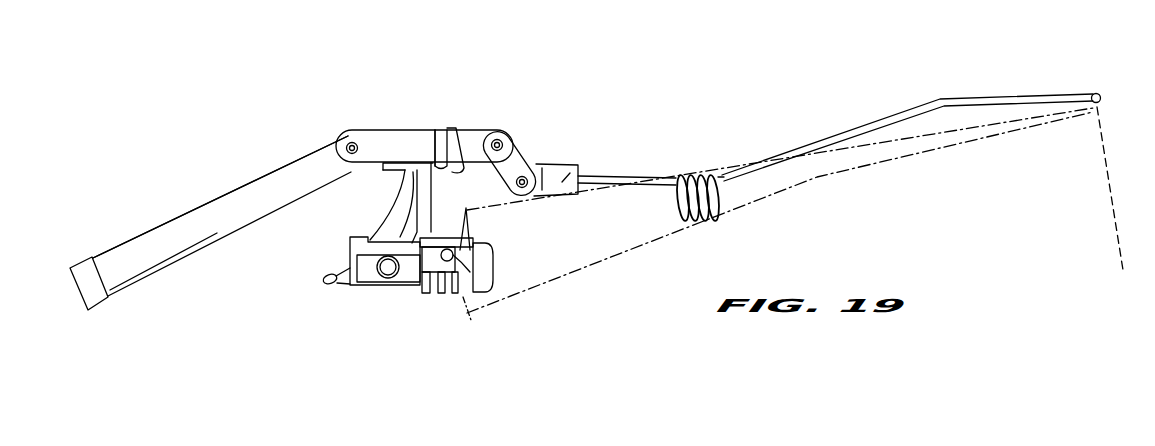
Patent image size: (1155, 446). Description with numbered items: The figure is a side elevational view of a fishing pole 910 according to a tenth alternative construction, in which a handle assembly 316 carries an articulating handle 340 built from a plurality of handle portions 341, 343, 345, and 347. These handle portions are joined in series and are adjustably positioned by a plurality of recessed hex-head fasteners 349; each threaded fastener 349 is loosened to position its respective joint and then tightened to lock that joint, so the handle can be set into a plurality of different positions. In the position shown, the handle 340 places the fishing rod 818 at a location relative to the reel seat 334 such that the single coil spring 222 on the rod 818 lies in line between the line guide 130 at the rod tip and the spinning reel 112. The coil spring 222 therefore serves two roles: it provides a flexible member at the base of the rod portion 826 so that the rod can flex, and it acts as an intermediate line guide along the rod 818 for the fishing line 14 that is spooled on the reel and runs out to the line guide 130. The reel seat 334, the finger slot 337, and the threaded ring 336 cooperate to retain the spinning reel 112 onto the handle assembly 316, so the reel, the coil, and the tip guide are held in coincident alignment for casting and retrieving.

The fishing pole 910 is at (195, 130).
The handle assembly 316 is at (257, 277).
The handle 340 is at (215, 197).
The handle portion 341 is at (298, 157).
The handle portion 343 is at (418, 128).
The recessed hex-head fastener 349 is at (348, 142).
The reel seat 334 is at (456, 126).
The threaded ring 336 is at (440, 168).
The finger slot 337 is at (383, 171).
The handle portion 345 is at (520, 152).
The handle portion 347 is at (578, 167).
The fishing rod 818 is at (820, 180).
The coil spring 222 is at (700, 222).
The rod portion 826 is at (915, 110).
The line guide 130 is at (1100, 90).
The fishing line 14 is at (1107, 157).
The spinning reel 112 is at (392, 300).